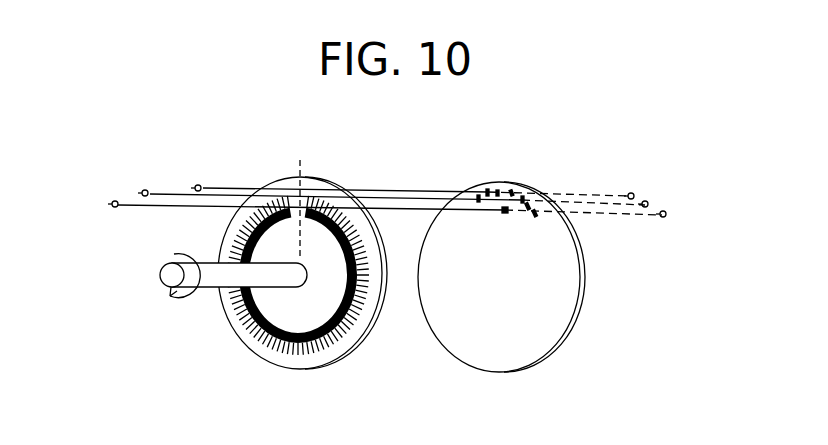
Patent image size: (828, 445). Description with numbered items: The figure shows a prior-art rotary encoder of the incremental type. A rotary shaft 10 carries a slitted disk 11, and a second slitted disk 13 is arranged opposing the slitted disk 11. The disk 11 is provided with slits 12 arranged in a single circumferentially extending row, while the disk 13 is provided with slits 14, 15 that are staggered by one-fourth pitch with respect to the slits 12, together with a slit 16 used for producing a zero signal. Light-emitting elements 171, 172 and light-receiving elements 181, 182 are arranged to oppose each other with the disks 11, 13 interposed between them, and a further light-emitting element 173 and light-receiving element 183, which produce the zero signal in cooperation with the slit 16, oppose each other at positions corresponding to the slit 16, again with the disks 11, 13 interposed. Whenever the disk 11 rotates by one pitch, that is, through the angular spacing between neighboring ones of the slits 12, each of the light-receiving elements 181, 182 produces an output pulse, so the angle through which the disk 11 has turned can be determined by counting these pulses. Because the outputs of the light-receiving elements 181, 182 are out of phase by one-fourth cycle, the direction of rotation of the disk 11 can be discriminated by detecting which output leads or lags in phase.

The rotary shaft 10 is at (163, 297).
The slitted disk 11 is at (352, 325).
The slits 12 is at (358, 288).
The slitted disk 13 is at (568, 300).
The slit 14 is at (488, 190).
The slit 15 is at (518, 200).
The slit for producing a zero signal 16 is at (507, 212).
The light-emitting element 171 is at (634, 193).
The light-emitting element 172 is at (648, 203).
The light-emitting element 173 is at (665, 218).
The light-receiving element 181 is at (201, 185).
The light-receiving element 182 is at (141, 191).
The light-receiving element 183 is at (113, 207).